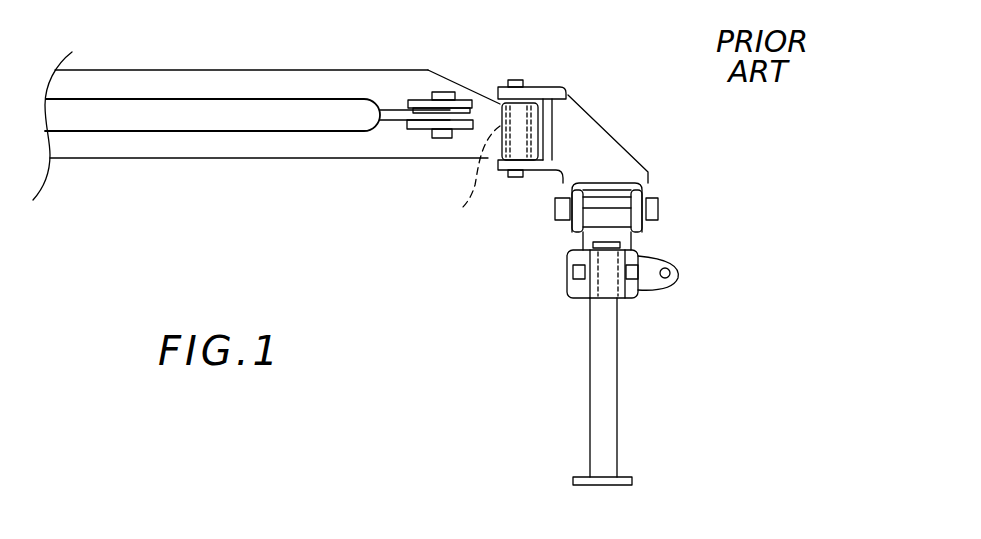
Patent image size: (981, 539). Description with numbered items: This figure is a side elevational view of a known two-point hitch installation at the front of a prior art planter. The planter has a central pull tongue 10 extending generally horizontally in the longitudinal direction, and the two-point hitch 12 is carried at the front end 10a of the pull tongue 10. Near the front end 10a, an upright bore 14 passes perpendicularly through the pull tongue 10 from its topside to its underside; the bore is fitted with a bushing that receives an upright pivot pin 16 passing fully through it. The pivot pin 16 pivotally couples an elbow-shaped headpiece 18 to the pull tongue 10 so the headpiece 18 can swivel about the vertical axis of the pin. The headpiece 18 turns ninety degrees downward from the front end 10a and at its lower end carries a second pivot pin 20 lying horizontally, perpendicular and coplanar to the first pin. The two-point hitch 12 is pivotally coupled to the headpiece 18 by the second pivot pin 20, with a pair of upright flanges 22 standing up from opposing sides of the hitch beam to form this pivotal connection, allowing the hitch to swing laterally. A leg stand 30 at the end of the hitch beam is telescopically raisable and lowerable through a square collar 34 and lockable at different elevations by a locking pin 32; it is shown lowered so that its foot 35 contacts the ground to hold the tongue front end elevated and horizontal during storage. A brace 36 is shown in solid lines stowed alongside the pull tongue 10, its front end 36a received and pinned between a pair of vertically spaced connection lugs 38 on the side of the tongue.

The pull tongue 10 is at (383, 61).
The front end of the pull tongue 10a is at (561, 105).
The two-point hitch 12 is at (661, 341).
The upright bore 14 is at (470, 190).
The upright pivot pin 16 is at (516, 86).
The elbow-shaped headpiece 18 is at (603, 136).
The second pivot pin 20 is at (597, 205).
The upright flanges 22 is at (580, 213).
The leg stand 30 is at (604, 400).
The locking pin 32 is at (630, 292).
The kickstand housing 34 is at (595, 292).
The foot 35 is at (617, 475).
The brace 36 is at (340, 117).
The front end of the brace 36a is at (454, 112).
The connection lugs 38 is at (417, 128).